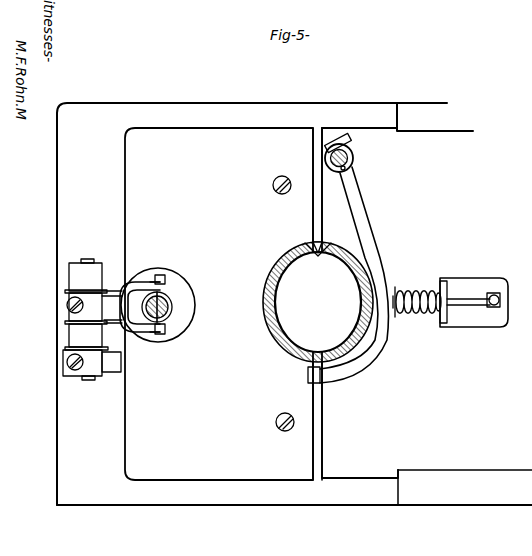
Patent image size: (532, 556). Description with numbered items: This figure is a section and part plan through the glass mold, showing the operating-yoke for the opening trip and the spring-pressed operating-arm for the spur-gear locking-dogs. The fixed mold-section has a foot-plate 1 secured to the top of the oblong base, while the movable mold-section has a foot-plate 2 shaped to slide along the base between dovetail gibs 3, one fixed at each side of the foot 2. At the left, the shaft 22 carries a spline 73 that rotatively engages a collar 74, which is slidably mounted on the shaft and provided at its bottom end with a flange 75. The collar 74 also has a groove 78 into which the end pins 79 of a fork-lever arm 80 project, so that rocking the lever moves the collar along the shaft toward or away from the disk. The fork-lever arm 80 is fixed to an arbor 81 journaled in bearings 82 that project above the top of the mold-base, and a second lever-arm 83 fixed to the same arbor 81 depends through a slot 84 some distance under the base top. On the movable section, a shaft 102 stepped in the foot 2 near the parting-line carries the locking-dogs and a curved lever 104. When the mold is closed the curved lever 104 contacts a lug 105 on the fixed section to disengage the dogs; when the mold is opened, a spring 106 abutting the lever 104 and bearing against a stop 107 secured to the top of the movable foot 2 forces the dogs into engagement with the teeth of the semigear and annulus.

The foot-plate 1 is at (225, 148).
The foot-plate 2 is at (373, 463).
The dovetail gibs 3 is at (422, 108).
The shaft 22 is at (170, 305).
The spline 73 is at (152, 280).
The collar 74 is at (172, 300).
The flange 75 is at (162, 282).
The groove 78 is at (178, 318).
The end pins 79 is at (160, 280).
The fork-lever arm 80 is at (118, 286).
The arbor 81 is at (88, 258).
The bearings 82 is at (80, 278).
The lever-arm 83 is at (95, 381).
The slot 84 is at (118, 365).
The shaft 102 is at (353, 158).
The curved lever 104 is at (376, 238).
The lug 105 is at (308, 378).
The spring 106 is at (414, 290).
The stop 107 is at (465, 320).